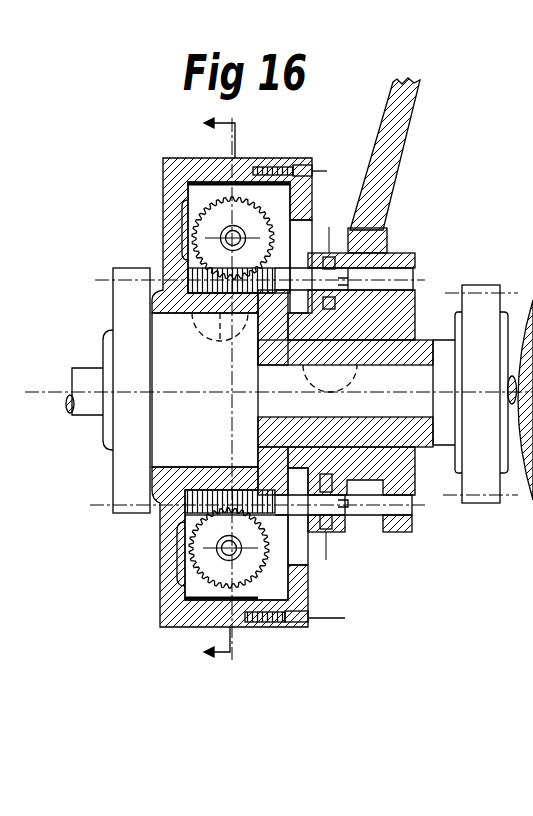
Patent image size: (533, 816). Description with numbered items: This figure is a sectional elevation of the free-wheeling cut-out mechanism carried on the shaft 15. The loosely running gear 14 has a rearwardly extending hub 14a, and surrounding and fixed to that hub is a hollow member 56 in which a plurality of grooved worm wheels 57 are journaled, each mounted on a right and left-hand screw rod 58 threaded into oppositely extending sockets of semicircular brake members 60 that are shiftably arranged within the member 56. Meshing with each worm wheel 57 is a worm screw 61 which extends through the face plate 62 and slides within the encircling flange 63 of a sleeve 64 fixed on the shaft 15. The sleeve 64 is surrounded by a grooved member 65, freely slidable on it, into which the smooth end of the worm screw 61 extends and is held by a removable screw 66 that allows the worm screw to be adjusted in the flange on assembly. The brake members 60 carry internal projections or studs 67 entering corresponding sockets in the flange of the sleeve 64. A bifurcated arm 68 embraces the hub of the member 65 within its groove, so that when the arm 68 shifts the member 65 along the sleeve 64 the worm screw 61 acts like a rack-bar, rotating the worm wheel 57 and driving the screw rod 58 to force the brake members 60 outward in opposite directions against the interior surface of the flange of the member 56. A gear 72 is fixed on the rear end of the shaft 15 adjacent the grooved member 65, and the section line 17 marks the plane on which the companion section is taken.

The loosely running gear 14 is at (130, 462).
The rearwardly extending hub 14a is at (163, 362).
The shaft 15 is at (88, 403).
The section line 17- 17 is at (207, 384).
The hollow member 56 is at (165, 613).
The grooved worm wheel 57 is at (222, 218).
The right and left-hand screw rod 58 is at (222, 243).
The semicircular brake member 60 is at (208, 195).
The worm screw 61 is at (300, 277).
The face plate 62 is at (307, 588).
The encircling flange 63 is at (215, 300).
The sleeve 64 is at (258, 425).
The grooved member 65 is at (415, 262).
The screw 66 is at (347, 252).
The projections or studs 67 is at (531, 480).
The bifurcated arm 68 is at (393, 137).
The gear 72 is at (473, 470).